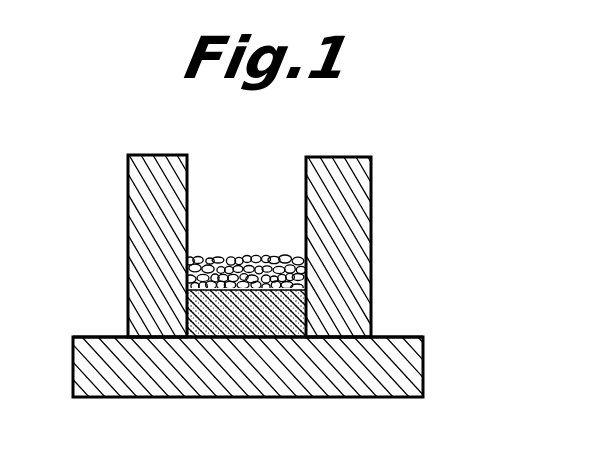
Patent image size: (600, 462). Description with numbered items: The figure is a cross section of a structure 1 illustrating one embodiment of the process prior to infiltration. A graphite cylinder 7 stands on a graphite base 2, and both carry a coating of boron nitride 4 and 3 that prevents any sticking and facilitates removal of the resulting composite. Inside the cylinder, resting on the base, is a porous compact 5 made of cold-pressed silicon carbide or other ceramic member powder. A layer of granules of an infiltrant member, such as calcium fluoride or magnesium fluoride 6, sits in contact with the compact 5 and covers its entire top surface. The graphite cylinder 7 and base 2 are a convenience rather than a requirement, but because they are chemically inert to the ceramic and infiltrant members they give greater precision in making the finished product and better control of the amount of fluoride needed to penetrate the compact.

The structure 1 is at (252, 248).
The graphite base 2 is at (420, 377).
The boron nitride coating 3 is at (247, 218).
The boron nitride coating 4 is at (425, 338).
The porous compact 5 is at (185, 318).
The layer of infiltrant granules 6 is at (252, 257).
The graphite cylinder 7 is at (361, 216).